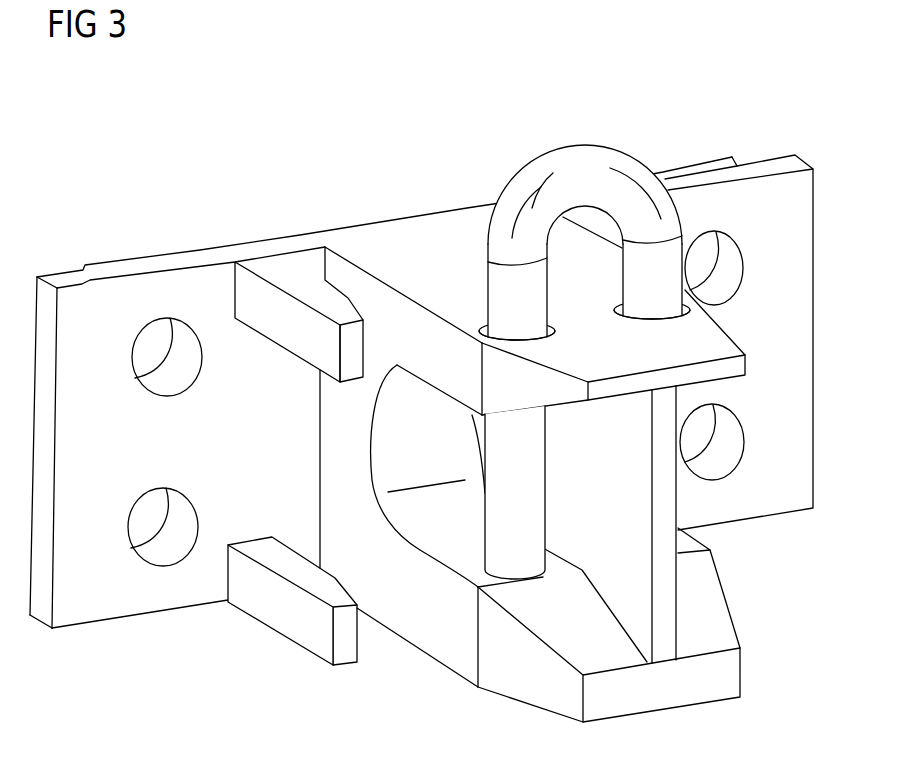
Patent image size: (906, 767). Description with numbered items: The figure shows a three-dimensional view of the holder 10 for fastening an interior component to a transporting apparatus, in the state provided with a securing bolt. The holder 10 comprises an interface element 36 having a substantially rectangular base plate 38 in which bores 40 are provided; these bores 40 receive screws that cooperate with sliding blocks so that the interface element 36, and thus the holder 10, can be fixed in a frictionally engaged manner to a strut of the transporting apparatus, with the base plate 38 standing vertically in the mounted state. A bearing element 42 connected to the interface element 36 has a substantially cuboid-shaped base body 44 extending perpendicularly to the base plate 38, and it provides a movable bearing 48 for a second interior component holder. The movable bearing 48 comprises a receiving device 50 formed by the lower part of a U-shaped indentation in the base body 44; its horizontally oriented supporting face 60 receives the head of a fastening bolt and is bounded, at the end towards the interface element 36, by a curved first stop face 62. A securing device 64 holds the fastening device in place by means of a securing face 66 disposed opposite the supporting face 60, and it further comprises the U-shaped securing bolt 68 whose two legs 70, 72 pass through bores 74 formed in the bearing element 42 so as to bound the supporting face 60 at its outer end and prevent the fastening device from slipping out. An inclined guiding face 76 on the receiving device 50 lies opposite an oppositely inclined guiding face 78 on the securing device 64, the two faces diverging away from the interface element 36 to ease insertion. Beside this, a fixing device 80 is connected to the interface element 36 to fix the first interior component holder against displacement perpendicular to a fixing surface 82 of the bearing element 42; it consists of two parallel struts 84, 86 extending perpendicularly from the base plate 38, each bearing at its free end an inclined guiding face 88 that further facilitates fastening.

The holder 10 is at (146, 130).
The interface element 36 is at (122, 228).
The base plate 38 is at (78, 296).
The bores 40 is at (266, 205).
The bearing element 42 is at (420, 232).
The base body 44 is at (473, 220).
The movable bearing 48 is at (778, 573).
The receiving device 50 is at (637, 497).
The supporting face 60 is at (438, 548).
The first stop face 62 is at (382, 467).
The securing device 64 is at (755, 320).
The securing face 66 is at (443, 396).
The securing bolt 68 is at (583, 162).
The leg 70 is at (530, 493).
The leg 72 is at (634, 280).
The bores 74 is at (555, 325).
The guiding face 76 is at (600, 658).
The guiding face 78 is at (557, 407).
The fixing device 80 is at (298, 688).
The fixing surface 82 is at (420, 637).
The strut 84 is at (278, 622).
The strut 86 is at (290, 338).
The guiding face 88 is at (362, 312).